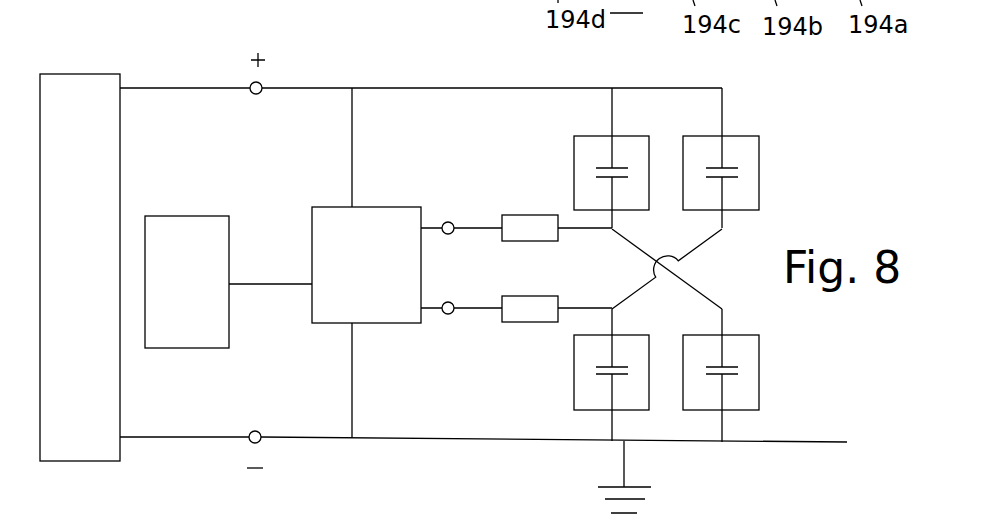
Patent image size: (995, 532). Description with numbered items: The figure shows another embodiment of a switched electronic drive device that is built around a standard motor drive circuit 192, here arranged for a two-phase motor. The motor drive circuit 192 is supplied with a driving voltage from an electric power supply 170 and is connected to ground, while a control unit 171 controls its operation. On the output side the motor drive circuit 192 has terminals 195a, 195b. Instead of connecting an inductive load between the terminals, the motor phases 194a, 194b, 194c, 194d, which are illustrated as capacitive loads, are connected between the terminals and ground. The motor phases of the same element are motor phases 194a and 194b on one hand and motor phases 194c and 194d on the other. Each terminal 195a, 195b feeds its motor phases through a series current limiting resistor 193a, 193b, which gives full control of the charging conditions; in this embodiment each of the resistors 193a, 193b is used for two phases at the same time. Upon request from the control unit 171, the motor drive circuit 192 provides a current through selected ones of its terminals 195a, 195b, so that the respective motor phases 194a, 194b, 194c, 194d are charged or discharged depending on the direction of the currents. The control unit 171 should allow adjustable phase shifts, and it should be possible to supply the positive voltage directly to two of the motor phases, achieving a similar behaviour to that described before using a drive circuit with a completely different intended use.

The electric power supply 170 is at (82, 110).
The control unit 171 is at (180, 253).
The motor drive circuit 192 is at (322, 223).
The resistor 193a is at (506, 218).
The resistor 193b is at (509, 322).
The motor phase 194a is at (638, 150).
The motor phase 194b is at (751, 150).
The motor phase 194c is at (748, 403).
The motor phase 194d is at (582, 403).
The terminal 195a is at (442, 222).
The terminal 195b is at (442, 314).